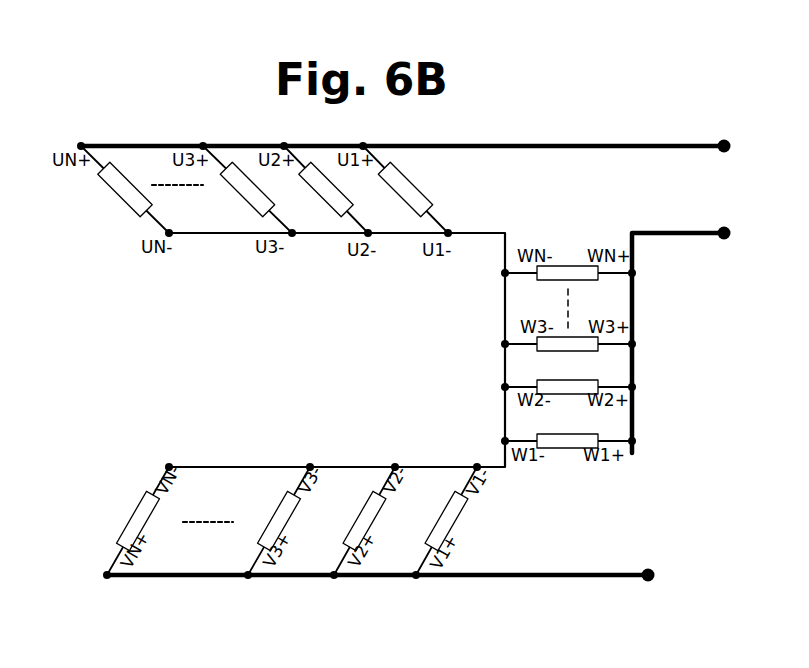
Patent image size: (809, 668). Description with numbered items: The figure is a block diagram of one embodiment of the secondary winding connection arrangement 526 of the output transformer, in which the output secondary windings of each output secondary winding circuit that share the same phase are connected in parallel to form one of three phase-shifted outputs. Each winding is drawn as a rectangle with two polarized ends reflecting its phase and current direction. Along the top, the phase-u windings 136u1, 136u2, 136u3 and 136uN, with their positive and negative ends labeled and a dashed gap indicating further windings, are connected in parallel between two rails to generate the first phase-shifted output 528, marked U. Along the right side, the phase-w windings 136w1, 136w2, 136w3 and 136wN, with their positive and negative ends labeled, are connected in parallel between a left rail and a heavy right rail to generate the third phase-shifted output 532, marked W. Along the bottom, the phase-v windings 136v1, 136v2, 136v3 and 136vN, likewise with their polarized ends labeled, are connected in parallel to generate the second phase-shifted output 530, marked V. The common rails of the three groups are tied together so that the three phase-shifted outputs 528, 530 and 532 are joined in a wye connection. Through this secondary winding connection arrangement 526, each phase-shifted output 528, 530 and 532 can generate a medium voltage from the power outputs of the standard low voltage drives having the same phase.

The secondary winding connection arrangement 526 is at (538, 98).
The first phase-shifted output 528 is at (722, 138).
The third phase-shifted output 532 is at (714, 232).
The second phase-shifted output 530 is at (644, 570).
The output secondary winding 136uN is at (120, 200).
The output secondary winding 136u3 is at (240, 198).
The output secondary winding 136u2 is at (325, 200).
The output secondary winding 136u1 is at (412, 192).
The output secondary winding 136wN is at (571, 265).
The output secondary winding 136w3 is at (576, 336).
The output secondary winding 136w2 is at (574, 380).
The output secondary winding 136w1 is at (566, 450).
The output secondary winding 136vN is at (137, 507).
The output secondary winding 136v3 is at (277, 515).
The output secondary winding 136v2 is at (352, 522).
The output secondary winding 136v1 is at (458, 518).